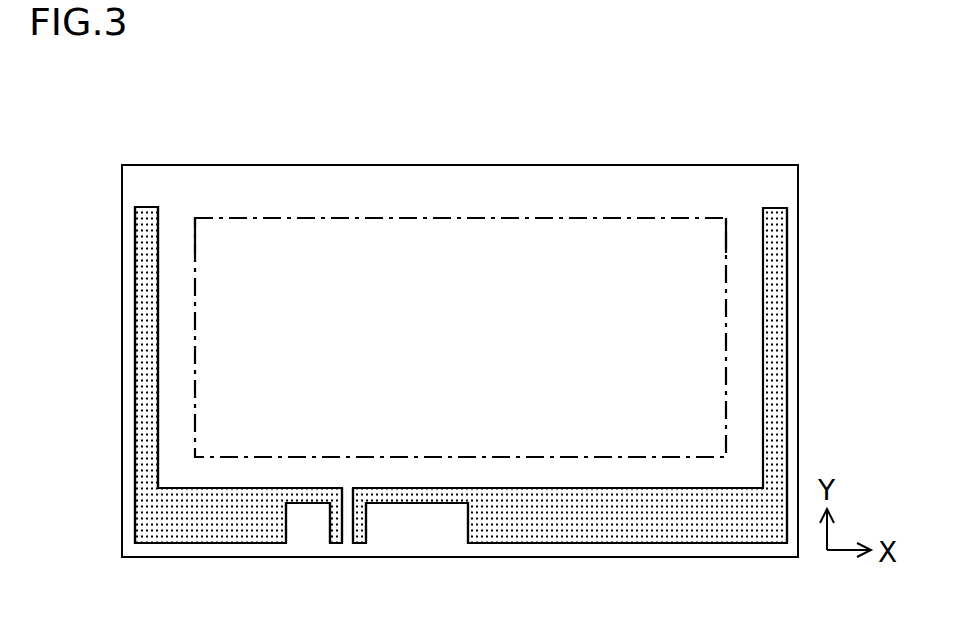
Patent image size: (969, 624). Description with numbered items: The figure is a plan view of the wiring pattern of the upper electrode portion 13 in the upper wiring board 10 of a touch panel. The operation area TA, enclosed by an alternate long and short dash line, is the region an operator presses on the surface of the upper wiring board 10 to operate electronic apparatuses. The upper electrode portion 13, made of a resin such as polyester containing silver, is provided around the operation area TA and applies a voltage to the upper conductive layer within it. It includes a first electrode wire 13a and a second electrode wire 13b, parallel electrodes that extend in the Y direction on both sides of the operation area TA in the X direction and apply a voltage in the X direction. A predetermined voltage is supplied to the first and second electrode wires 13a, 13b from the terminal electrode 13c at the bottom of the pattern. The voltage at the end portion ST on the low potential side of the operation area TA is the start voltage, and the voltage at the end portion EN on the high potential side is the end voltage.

The upper wiring board 10 is at (142, 96).
The upper electrode portion 13 is at (791, 230).
The first electrode wire 13a is at (778, 338).
The second electrode wire 13b is at (143, 340).
The terminal electrode 13c is at (370, 563).
The operation area TA is at (618, 253).
The end portion on high potential side EN is at (195, 251).
The end portion on low potential side ST is at (727, 252).